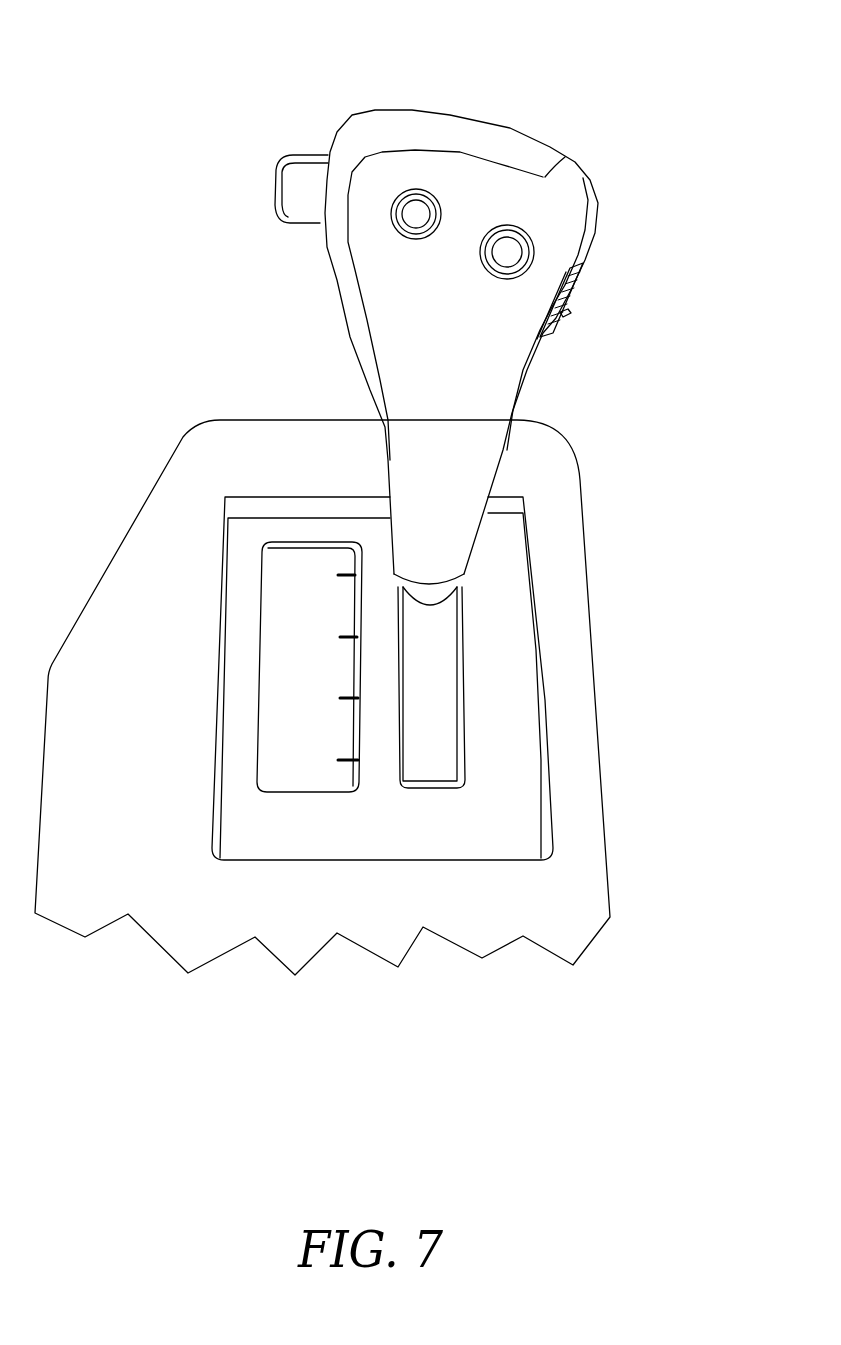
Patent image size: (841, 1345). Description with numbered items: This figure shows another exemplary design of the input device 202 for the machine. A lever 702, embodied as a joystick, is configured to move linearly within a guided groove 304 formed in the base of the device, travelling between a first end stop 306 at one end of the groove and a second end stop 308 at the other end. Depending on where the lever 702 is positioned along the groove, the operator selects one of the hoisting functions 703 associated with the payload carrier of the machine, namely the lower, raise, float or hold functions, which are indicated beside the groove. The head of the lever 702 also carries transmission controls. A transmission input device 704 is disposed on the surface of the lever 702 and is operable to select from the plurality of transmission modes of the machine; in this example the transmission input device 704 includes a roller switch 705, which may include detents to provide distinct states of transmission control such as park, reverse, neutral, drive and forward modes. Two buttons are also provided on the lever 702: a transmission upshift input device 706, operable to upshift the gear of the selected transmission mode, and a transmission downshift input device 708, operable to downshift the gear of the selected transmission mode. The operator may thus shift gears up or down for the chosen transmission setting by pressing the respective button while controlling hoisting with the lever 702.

The input device 202 is at (238, 100).
The guided groove 304 is at (465, 702).
The first end stop 306 is at (474, 573).
The second end stop 308 is at (416, 799).
The lever 702 is at (510, 128).
The hoisting functions 703 is at (246, 650).
The transmission input device 704 is at (577, 272).
The roller switch 705 is at (567, 320).
The transmission upshift input device 706 is at (416, 214).
The transmission downshift input device 708 is at (507, 252).